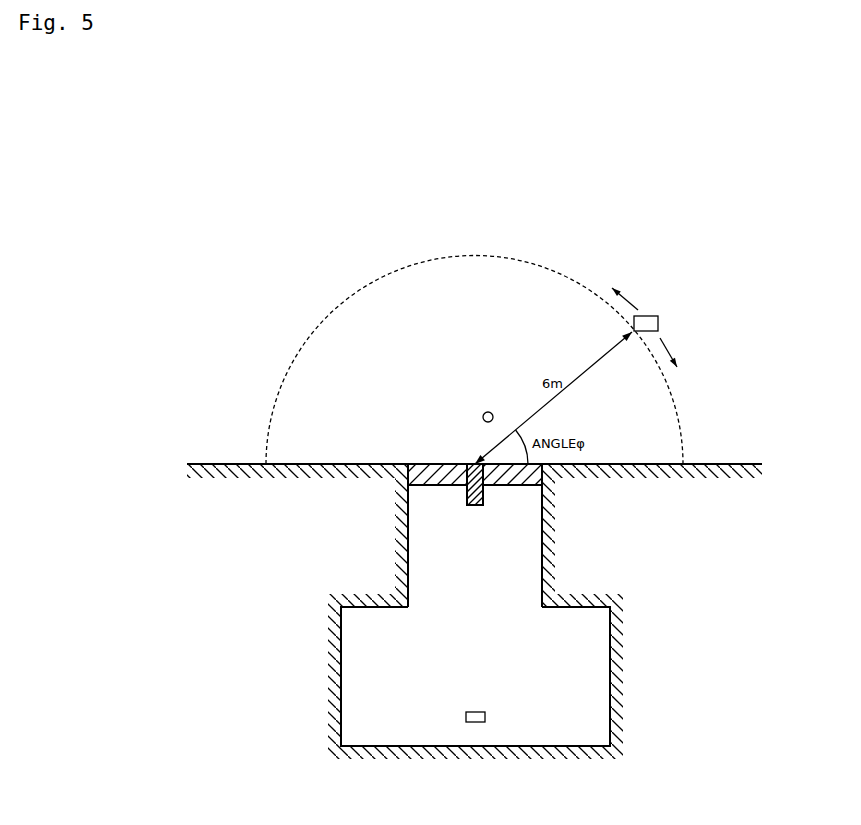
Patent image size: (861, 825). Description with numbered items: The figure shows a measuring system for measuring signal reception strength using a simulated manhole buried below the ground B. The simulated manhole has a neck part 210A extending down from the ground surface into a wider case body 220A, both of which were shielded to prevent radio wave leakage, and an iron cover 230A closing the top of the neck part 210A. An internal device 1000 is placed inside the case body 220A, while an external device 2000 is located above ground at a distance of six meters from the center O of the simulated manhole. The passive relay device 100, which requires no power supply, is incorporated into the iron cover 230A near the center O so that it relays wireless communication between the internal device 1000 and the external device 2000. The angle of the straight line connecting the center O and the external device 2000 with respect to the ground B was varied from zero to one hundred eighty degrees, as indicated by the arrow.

The passive relay device 100 is at (470, 463).
The external device 2000 is at (658, 322).
The internal device 1000 is at (485, 717).
The iron cover 230A is at (440, 484).
The neck part 210A is at (408, 575).
The case body 220A is at (367, 608).
The ground B is at (727, 464).
The center of the simulated manhole O is at (477, 463).